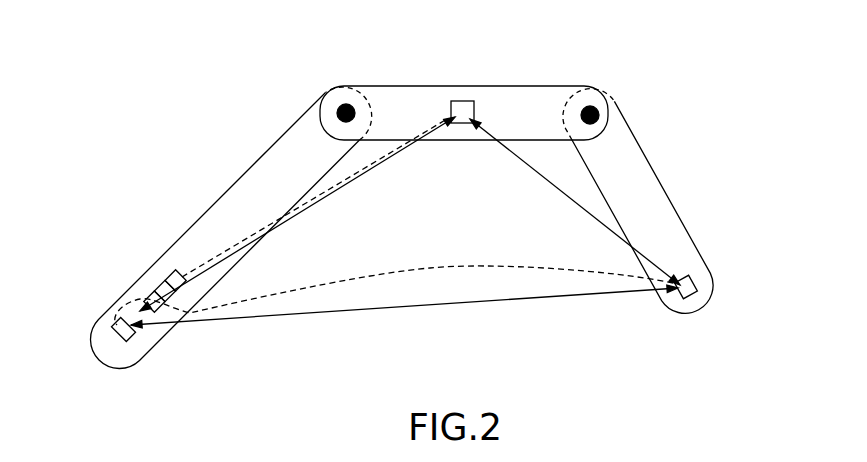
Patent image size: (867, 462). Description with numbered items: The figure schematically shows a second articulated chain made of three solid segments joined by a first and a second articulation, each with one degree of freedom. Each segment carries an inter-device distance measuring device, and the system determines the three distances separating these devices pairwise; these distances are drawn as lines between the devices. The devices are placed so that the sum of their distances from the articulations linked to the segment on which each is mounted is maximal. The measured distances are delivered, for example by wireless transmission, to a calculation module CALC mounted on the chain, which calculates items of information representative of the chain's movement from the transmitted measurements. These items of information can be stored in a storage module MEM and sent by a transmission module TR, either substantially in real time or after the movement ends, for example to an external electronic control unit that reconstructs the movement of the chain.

The calculation module CALC is at (142, 302).
The storage module MEM is at (153, 292).
The transmission module TR is at (170, 282).